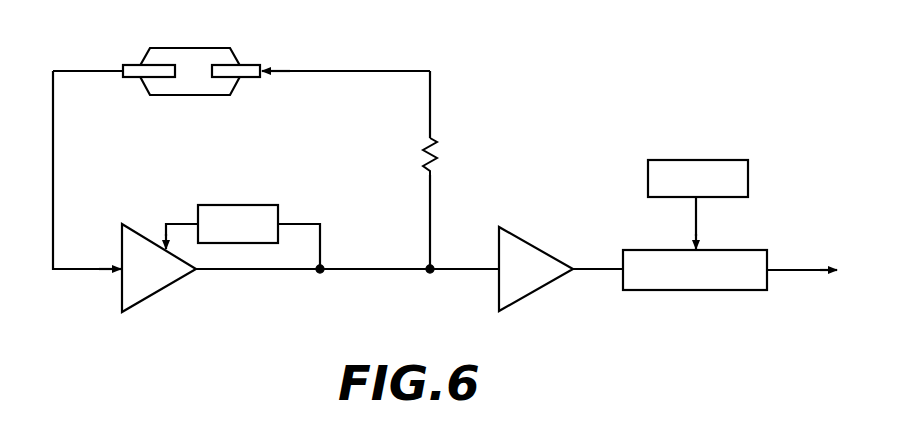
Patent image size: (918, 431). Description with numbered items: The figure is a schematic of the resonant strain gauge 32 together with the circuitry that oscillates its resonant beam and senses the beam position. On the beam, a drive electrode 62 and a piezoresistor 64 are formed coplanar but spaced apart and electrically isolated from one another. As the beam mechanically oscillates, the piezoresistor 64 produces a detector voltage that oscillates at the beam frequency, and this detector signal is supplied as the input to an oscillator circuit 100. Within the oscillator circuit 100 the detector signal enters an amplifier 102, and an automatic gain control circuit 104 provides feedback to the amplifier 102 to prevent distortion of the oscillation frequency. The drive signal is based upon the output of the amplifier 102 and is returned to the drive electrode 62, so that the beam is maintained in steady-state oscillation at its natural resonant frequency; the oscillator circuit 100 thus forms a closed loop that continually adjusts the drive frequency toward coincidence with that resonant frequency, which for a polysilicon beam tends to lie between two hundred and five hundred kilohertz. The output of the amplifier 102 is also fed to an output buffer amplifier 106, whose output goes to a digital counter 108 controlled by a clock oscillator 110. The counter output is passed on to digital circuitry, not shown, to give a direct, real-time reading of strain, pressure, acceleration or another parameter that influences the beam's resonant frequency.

The resonant strain gauge 32 is at (190, 48).
The drive electrode 62 is at (243, 65).
The piezoresistor 64 is at (140, 65).
The oscillator circuit 100 is at (497, 181).
The amplifier 102 is at (157, 288).
The automatic gain control circuit 104 is at (238, 205).
The output buffer amplifier 106 is at (552, 253).
The digital counter 108 is at (702, 290).
The clock oscillator 110 is at (693, 160).